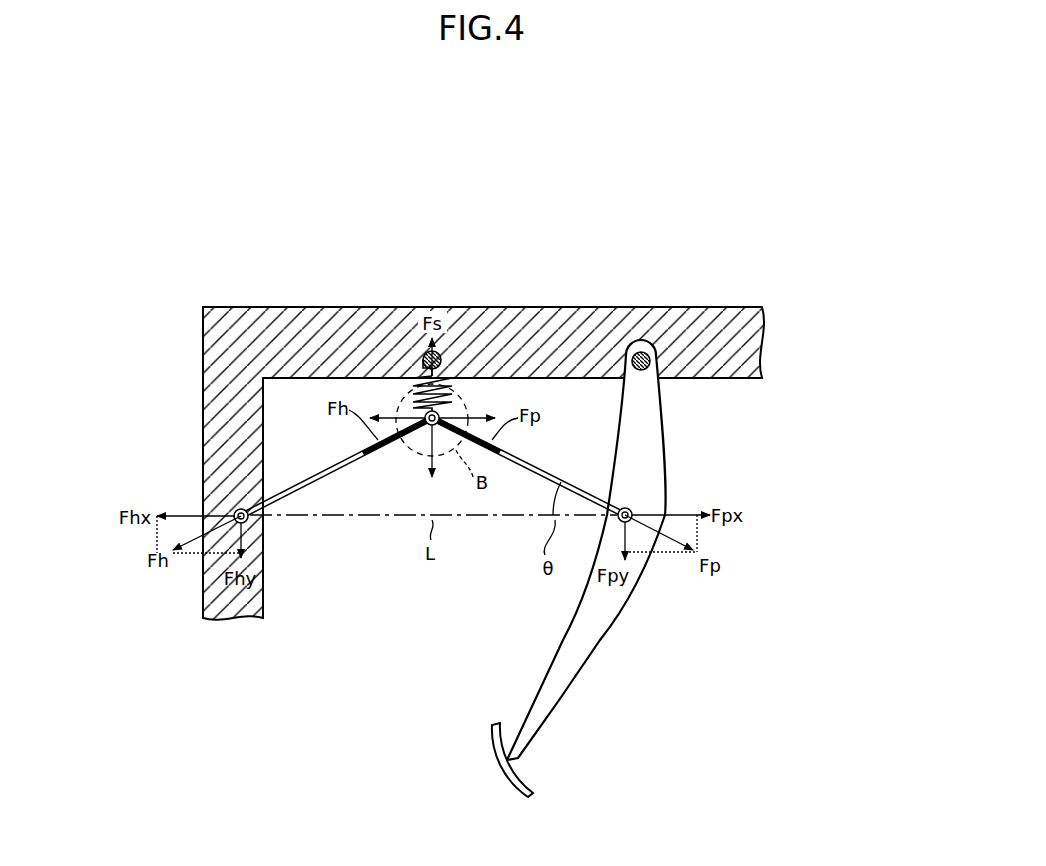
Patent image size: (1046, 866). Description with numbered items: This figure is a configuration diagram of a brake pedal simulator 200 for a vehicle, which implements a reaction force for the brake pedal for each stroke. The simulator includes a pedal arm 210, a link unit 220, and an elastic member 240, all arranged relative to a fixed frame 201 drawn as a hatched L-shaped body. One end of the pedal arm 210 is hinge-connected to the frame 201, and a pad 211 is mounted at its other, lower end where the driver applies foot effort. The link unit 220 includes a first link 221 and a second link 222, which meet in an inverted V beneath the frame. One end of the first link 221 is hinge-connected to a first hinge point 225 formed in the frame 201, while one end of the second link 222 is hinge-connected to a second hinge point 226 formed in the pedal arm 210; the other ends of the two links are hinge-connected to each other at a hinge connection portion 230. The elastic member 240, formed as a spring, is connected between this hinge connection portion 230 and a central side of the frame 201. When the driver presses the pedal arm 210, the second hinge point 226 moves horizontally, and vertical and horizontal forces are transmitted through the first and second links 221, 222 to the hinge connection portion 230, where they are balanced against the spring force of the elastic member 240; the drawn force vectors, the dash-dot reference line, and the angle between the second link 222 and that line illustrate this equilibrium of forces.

The brake pedal simulator 200 is at (458, 213).
The frame 201 is at (520, 318).
The pedal arm 210 is at (648, 432).
The pad 211 is at (505, 775).
The link unit 220 is at (390, 522).
The first link 221 is at (330, 470).
The second link 222 is at (542, 470).
The first hinge point 225 is at (235, 510).
The second hinge point 226 is at (632, 509).
The hinge connection portion 230 is at (420, 430).
The elastic member 240 is at (456, 386).